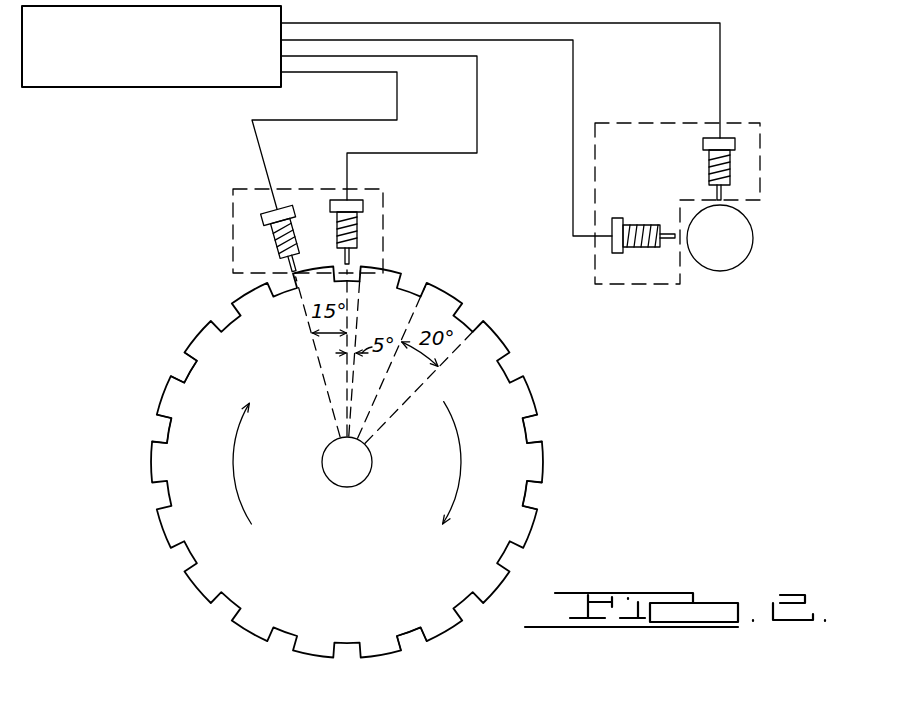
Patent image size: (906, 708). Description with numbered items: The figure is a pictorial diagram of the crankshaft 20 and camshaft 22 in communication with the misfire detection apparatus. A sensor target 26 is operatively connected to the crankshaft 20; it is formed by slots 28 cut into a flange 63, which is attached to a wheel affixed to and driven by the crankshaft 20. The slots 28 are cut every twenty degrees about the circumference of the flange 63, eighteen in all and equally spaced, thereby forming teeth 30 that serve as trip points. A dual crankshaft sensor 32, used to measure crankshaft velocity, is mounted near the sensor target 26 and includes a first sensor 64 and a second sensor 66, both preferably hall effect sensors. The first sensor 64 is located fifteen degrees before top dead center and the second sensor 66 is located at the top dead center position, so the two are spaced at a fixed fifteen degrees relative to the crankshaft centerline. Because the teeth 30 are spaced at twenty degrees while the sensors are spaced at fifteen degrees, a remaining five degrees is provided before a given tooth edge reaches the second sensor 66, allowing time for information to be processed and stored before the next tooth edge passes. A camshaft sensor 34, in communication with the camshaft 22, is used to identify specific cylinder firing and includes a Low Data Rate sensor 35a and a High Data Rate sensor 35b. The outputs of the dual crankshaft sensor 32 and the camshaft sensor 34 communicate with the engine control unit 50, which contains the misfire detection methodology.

The engine control unit 50 is at (95, 89).
The camshaft sensor 34 is at (650, 118).
The Low Data Rate (LDR) sensor 35a is at (641, 225).
The High Data Rate (HDR) sensor 35b is at (732, 166).
The camshaft 22 is at (735, 252).
The dual crankshaft sensor 32 is at (389, 204).
The first sensor 64 is at (268, 228).
The second sensor 66 is at (357, 236).
The sensor target 26 is at (218, 532).
The slots 28 is at (188, 372).
The teeth 30 is at (523, 410).
The flange 63 is at (410, 612).
The crankshaft 20 is at (349, 488).